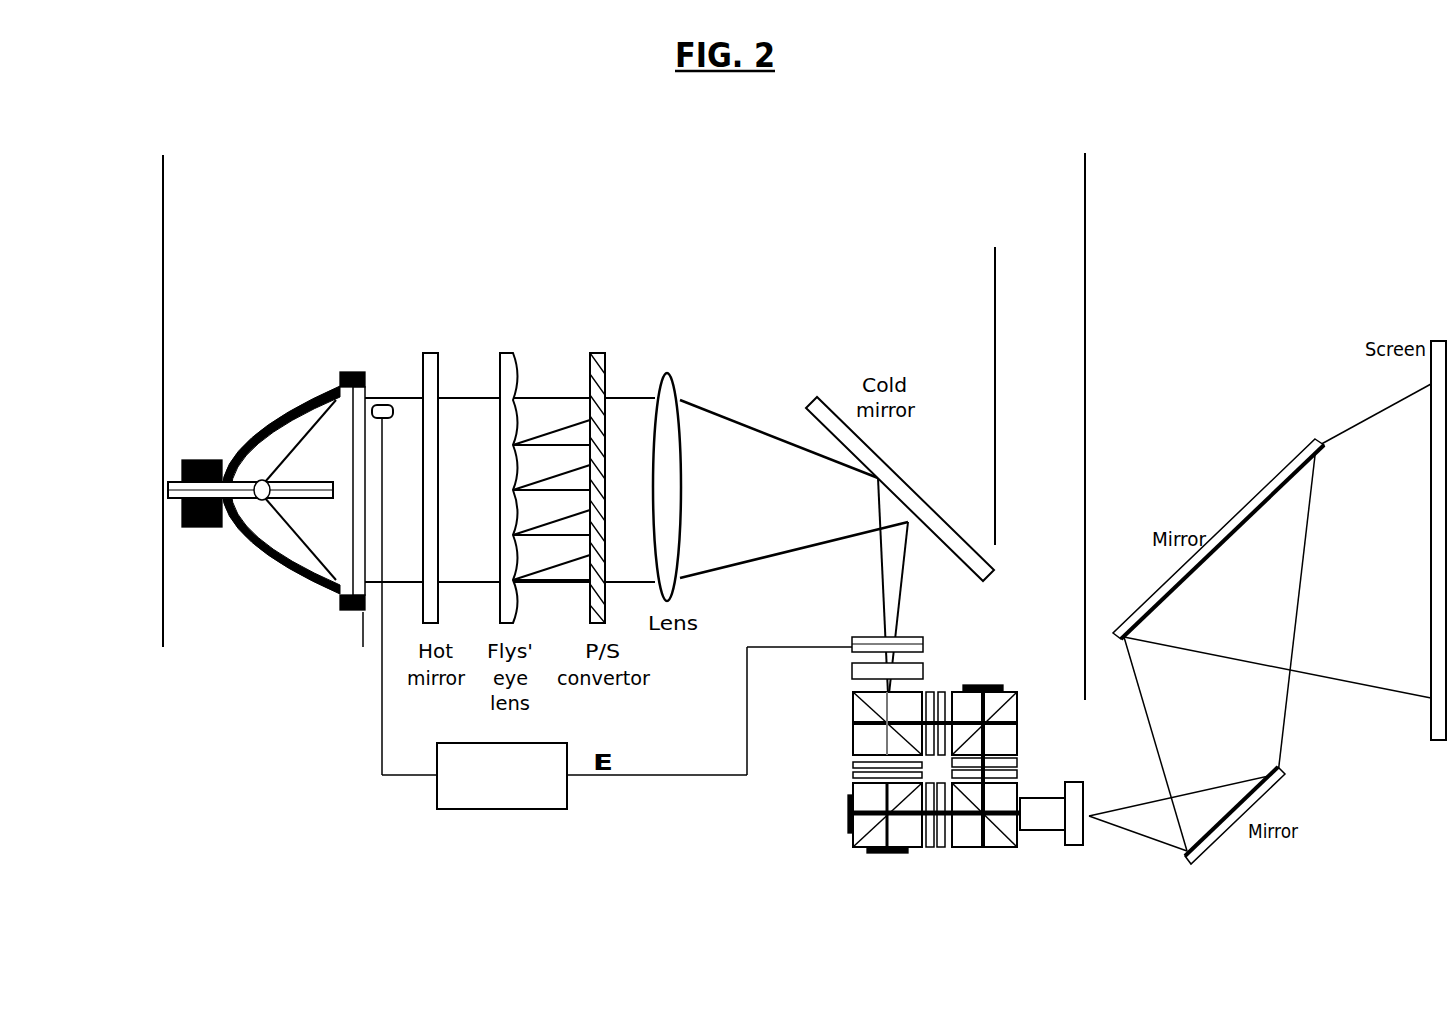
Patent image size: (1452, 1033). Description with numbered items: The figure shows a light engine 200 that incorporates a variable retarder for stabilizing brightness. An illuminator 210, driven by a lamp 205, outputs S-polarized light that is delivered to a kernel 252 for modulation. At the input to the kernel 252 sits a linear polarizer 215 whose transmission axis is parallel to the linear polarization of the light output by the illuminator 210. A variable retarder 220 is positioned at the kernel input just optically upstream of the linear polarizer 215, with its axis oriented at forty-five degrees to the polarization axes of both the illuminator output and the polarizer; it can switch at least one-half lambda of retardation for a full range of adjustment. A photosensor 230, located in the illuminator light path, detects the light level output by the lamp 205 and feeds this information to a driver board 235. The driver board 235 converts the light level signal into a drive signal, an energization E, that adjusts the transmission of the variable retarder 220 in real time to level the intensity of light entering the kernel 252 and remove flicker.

The light engine 200 is at (165, 200).
The illuminator 210 is at (165, 278).
The lamp 205 is at (361, 624).
The photosensor 230 is at (403, 410).
The driver board 235 is at (517, 789).
The variable retarder 220 is at (923, 644).
The linear polarizer 215 is at (847, 678).
The kernel 252 is at (847, 852).